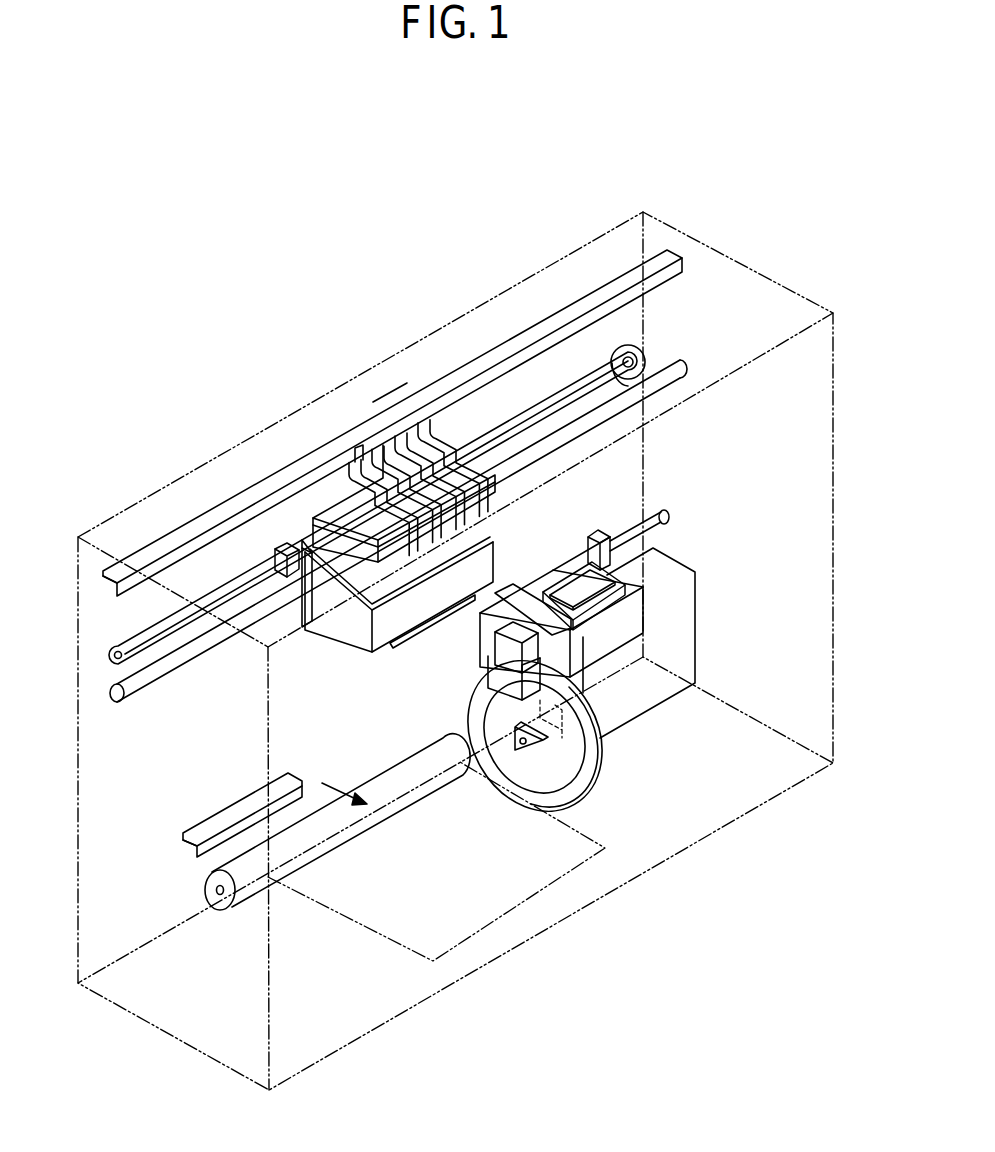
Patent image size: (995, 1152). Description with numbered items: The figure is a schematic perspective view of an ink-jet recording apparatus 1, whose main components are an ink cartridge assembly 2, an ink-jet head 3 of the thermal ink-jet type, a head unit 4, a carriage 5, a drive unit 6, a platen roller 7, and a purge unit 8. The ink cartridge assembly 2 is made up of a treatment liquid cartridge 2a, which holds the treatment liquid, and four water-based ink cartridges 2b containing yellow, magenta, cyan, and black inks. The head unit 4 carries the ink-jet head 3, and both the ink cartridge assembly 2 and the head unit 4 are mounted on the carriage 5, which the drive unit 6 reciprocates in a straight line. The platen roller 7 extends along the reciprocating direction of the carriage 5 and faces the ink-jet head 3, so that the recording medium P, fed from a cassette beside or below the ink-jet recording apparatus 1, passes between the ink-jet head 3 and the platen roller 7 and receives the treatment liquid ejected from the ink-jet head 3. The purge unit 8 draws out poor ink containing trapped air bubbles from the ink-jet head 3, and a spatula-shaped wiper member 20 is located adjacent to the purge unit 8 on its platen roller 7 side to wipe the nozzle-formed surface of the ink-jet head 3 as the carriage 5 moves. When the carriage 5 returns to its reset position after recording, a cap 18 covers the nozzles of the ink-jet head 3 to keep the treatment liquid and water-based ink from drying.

The ink-jet recording apparatus 1 is at (347, 226).
The ink cartridge assembly 2 is at (366, 440).
The treatment liquid cartridge 2a is at (337, 495).
The water-based ink cartridges 2b is at (408, 450).
The ink-jet head 3 is at (450, 612).
The head unit 4 is at (436, 650).
The carriage 5 is at (277, 556).
The drive unit 6 is at (667, 238).
The platen roller 7 is at (344, 827).
The purge unit 8 is at (752, 662).
The cap 18 is at (617, 571).
The wiper member 20 is at (510, 653).
The recording medium P is at (395, 926).